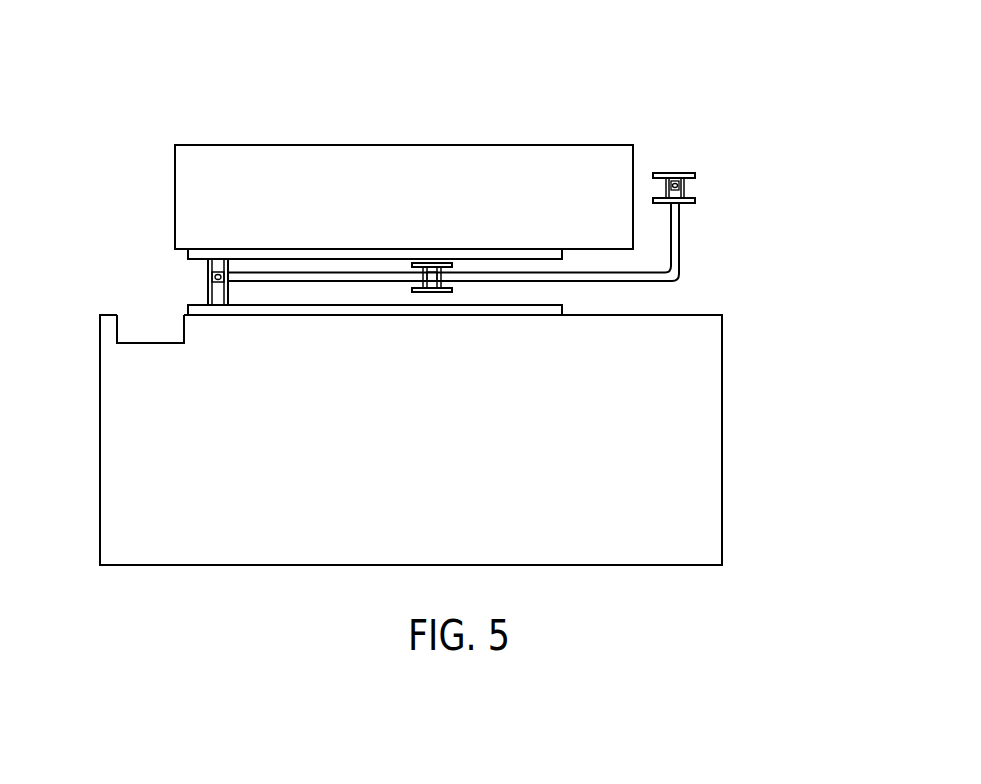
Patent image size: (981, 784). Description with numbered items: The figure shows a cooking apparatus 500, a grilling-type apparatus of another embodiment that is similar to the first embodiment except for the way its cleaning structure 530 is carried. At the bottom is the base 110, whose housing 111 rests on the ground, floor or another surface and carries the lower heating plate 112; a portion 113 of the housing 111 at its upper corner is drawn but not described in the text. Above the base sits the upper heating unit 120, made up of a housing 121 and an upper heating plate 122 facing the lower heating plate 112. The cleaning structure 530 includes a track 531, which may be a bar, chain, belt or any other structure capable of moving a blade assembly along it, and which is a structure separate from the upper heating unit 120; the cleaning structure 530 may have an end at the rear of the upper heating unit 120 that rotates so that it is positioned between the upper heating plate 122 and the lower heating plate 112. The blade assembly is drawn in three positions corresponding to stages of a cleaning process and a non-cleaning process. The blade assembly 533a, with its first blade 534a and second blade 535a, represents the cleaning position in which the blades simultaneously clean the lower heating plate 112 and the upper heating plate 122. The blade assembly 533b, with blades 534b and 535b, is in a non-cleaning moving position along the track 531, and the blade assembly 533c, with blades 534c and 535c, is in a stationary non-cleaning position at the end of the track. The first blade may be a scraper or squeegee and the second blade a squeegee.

The cooking apparatus 500 is at (613, 80).
The base 110 is at (86, 442).
The housing 111 is at (708, 385).
The lower heating plate 112 is at (385, 310).
The recess 113 is at (148, 343).
The upper heating unit 120 is at (155, 185).
The housing 121 is at (382, 158).
The upper heating plate 122 is at (322, 255).
The cleaning structure 530 is at (775, 261).
The track 531 is at (677, 247).
The blade assembly 533a is at (237, 260).
The blade assembly 533b is at (430, 300).
The blade assembly 533c is at (667, 170).
The first blade 534a is at (208, 293).
The first blade 534b is at (431, 263).
The first blade 534c is at (695, 176).
The second blade 535a is at (227, 293).
The second blade 535b is at (445, 292).
The second blade 535c is at (695, 200).